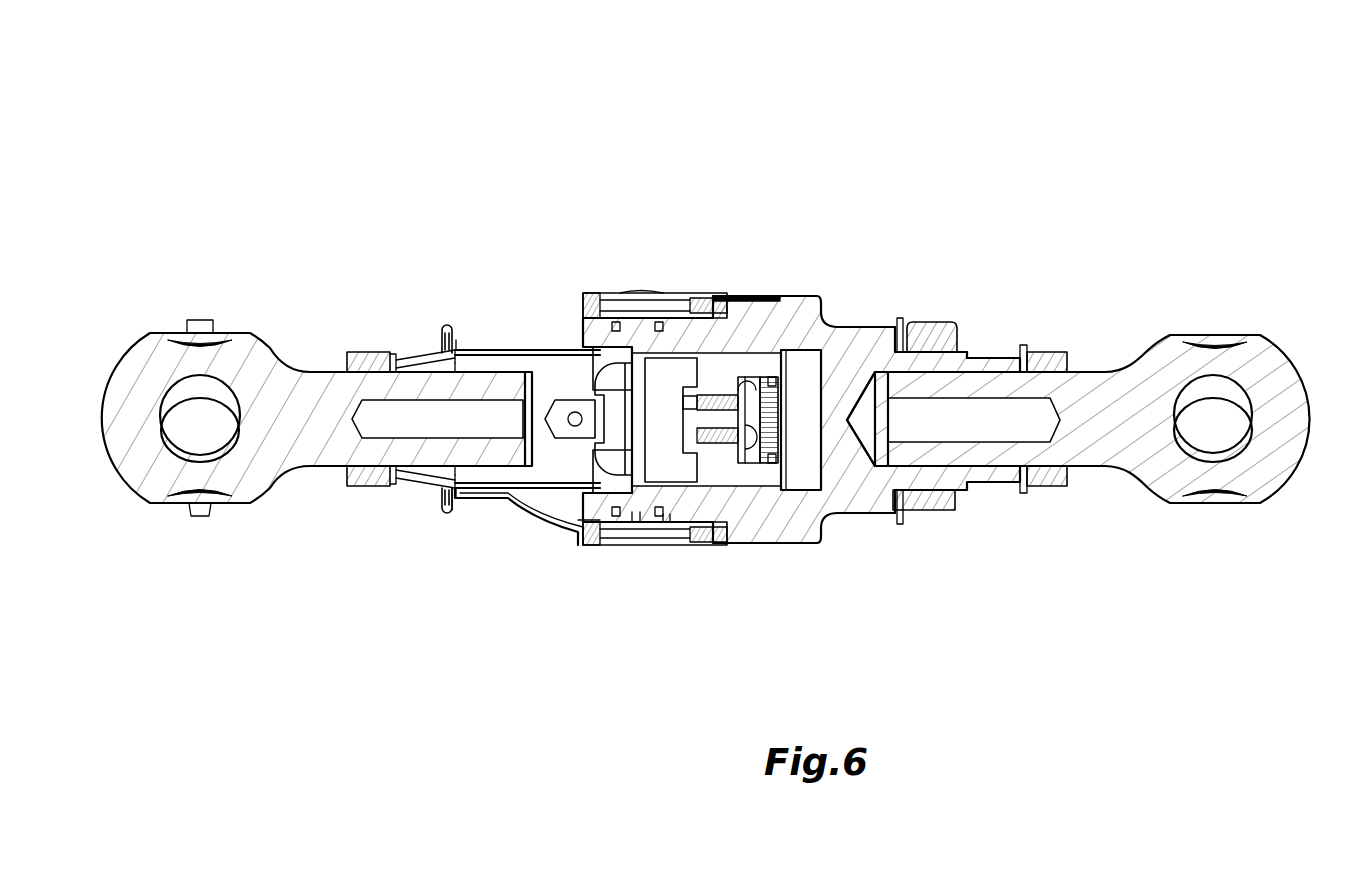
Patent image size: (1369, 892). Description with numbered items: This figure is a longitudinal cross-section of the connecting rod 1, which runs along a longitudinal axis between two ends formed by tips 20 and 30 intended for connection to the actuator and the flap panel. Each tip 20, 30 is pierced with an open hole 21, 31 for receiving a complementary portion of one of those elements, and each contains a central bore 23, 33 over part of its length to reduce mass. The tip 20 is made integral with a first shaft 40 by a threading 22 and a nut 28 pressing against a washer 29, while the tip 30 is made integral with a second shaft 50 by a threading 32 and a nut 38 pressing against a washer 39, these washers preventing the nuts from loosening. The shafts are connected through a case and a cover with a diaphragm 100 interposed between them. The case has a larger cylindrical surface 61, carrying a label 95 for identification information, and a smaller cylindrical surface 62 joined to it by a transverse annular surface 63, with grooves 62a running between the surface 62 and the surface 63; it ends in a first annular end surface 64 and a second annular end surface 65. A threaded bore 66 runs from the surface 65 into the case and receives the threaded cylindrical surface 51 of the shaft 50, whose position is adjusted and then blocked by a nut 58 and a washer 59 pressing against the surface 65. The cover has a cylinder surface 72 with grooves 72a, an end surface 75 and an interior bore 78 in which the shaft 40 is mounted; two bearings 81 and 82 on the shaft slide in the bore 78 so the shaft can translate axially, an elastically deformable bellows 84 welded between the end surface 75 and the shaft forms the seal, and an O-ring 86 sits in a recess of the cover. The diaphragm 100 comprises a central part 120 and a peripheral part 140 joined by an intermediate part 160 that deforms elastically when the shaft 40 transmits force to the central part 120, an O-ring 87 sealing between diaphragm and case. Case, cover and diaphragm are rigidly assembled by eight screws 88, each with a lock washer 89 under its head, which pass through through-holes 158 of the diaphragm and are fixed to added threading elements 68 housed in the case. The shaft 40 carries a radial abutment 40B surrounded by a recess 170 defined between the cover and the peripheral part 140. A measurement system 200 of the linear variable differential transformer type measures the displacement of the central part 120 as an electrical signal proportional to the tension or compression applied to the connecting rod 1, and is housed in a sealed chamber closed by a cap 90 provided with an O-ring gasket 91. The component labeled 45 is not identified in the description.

The connecting rod 1 is at (243, 168).
The tip 20 is at (135, 375).
The open hole 21 is at (185, 438).
The threading 22 is at (405, 470).
The central bore 23 is at (421, 419).
The nut 28 is at (345, 356).
The washer 29 is at (385, 352).
The tip 30 is at (1275, 368).
The open hole 31 is at (1230, 442).
The threading 32 is at (1045, 488).
The central bore 33 is at (976, 419).
The nut 38 is at (1067, 358).
The washer 39 is at (1050, 352).
The first shaft 40 is at (400, 365).
The abutment 40B is at (525, 350).
The lower jam nut 45 is at (383, 480).
The second shaft 50 is at (985, 355).
The threaded cylindrical surface 51 is at (897, 522).
The nut 58 is at (940, 340).
The washer 59 is at (930, 322).
The cylindrical surface 61 is at (810, 295).
The cylindrical surface 62 is at (865, 322).
The grooves 62a is at (840, 322).
The transverse annular surface 63 is at (830, 545).
The first annular end surface 64 is at (645, 548).
The second annular end surface 65 is at (903, 494).
The threaded bore 66 is at (836, 512).
The added threading elements 68 is at (705, 298).
The cylinder surface 72 is at (446, 328).
The grooves 72a is at (455, 505).
The second annular end surface 75 is at (440, 490).
The second interior bore 78 is at (447, 510).
The bearing 81 is at (570, 396).
The bearing 82 is at (460, 348).
The elastically deformable bellows 84 is at (432, 362).
The O-ring 86 is at (625, 316).
The O-ring 87 is at (660, 350).
The screws 88 is at (590, 298).
The lock washer 89 is at (612, 320).
The cap 90 is at (750, 470).
The O-ring gasket 91 is at (770, 470).
The label 95 is at (737, 295).
The diaphragm 100 is at (660, 292).
The central part 120 is at (515, 500).
The peripheral part 140 is at (660, 548).
The through-holes 158 is at (636, 292).
The intermediate part 160 is at (693, 482).
The recess 170 is at (605, 546).
The measurement system 200 is at (703, 388).